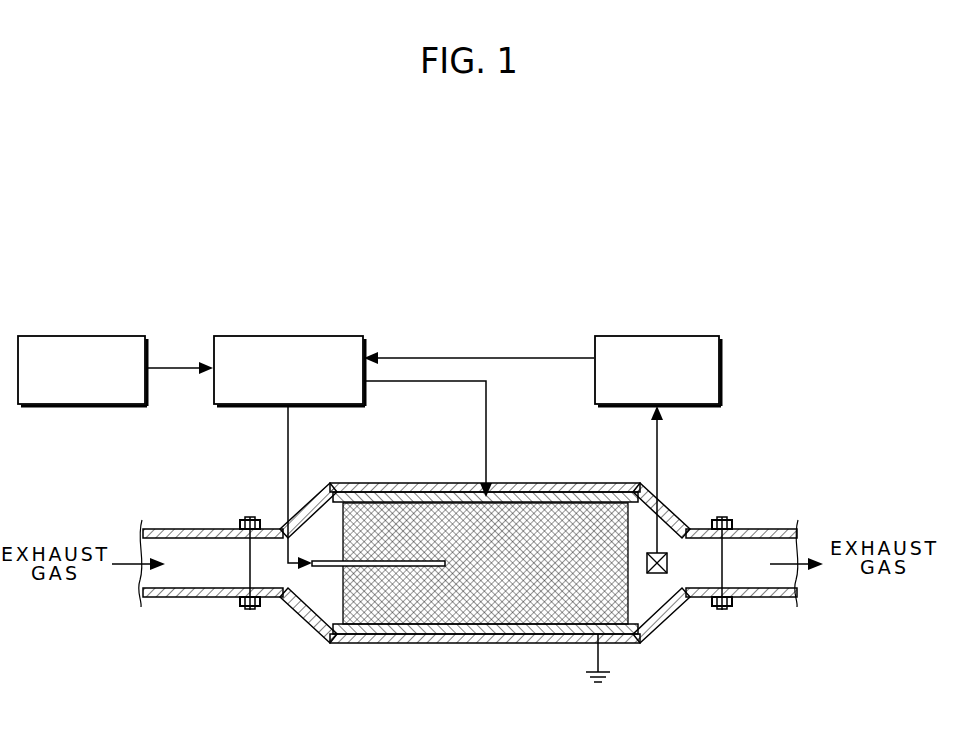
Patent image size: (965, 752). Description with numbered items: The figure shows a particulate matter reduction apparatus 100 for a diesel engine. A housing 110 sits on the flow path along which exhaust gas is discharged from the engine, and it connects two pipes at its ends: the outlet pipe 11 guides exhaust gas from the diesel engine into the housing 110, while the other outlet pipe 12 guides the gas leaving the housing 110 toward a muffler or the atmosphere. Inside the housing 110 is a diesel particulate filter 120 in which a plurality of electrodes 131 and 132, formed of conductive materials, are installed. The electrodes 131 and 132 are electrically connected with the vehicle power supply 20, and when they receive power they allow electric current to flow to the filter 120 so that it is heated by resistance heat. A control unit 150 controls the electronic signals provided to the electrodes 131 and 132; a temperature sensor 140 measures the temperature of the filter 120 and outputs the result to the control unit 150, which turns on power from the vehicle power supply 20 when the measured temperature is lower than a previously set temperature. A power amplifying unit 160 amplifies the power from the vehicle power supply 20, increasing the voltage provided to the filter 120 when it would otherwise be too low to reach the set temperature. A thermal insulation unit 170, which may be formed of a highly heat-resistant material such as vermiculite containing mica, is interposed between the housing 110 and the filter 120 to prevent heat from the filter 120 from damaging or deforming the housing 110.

The particulate matter reduction apparatus 100 is at (770, 282).
The vehicle power supply 20 is at (93, 335).
The power amplifying unit 160 is at (300, 335).
The control unit 150 is at (670, 335).
The outlet pipe 11 is at (183, 598).
The outlet pipe 12 is at (776, 598).
The housing 110 is at (463, 645).
The diesel particulate filter 120 is at (578, 610).
The electrode 131 is at (320, 570).
The electrode 132 is at (520, 503).
The temperature sensor 140 is at (663, 574).
The thermal insulation unit 170 is at (370, 636).